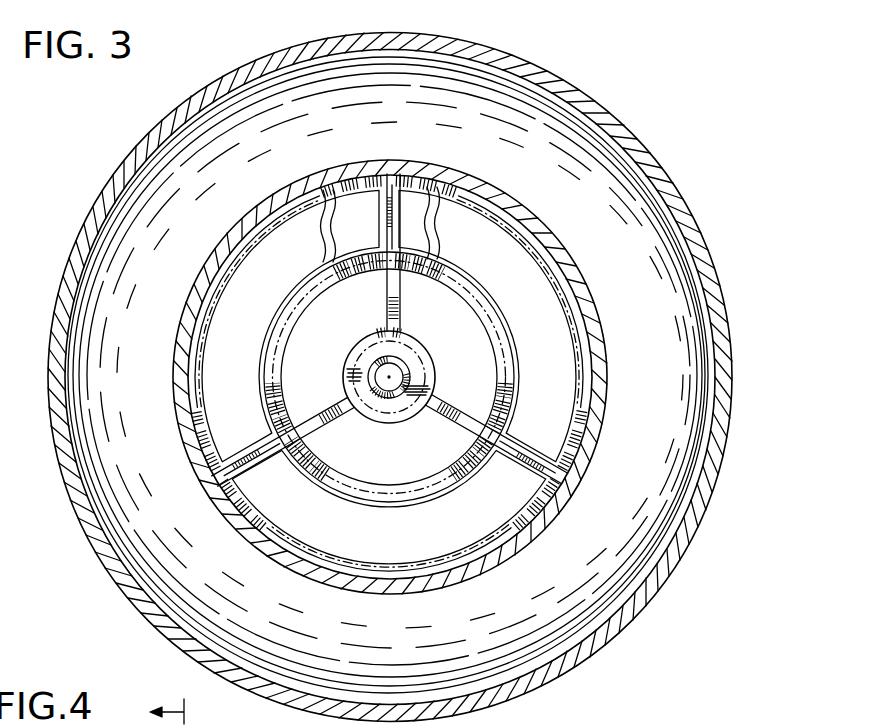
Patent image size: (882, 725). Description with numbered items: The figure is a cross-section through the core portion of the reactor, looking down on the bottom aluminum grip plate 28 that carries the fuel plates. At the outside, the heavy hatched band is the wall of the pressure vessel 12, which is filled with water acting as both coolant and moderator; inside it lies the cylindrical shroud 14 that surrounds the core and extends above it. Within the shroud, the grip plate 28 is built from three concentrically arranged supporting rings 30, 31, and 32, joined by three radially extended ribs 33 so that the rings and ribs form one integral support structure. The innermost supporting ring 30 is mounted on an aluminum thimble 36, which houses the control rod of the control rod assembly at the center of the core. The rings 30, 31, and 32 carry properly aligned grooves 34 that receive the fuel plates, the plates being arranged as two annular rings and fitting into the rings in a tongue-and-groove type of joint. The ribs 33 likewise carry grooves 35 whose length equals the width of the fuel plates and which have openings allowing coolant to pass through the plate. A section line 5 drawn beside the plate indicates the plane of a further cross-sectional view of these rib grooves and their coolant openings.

In FIG. 3, the pressure vessel 12 is at (688, 228).
In FIG. 3, the cylindrical shroud 14 is at (596, 322).
In FIG. 3, the bottom aluminum grip plate 28 is at (340, 515).
In FIG. 3, the innermost supporting ring 30 is at (420, 364).
In FIG. 3, the supporting ring 31 is at (504, 352).
In FIG. 3, the supporting ring 32 is at (580, 356).
In FIG. 3, the radially extended ribs 33 is at (388, 292).
In FIG. 3, the grooves 34 is at (334, 214).
In FIG. 3, the grooves 35 is at (387, 213).
In FIG. 3, the aluminum thimble 36 is at (388, 408).
In FIG. 4, the section line 5 is at (176, 707).